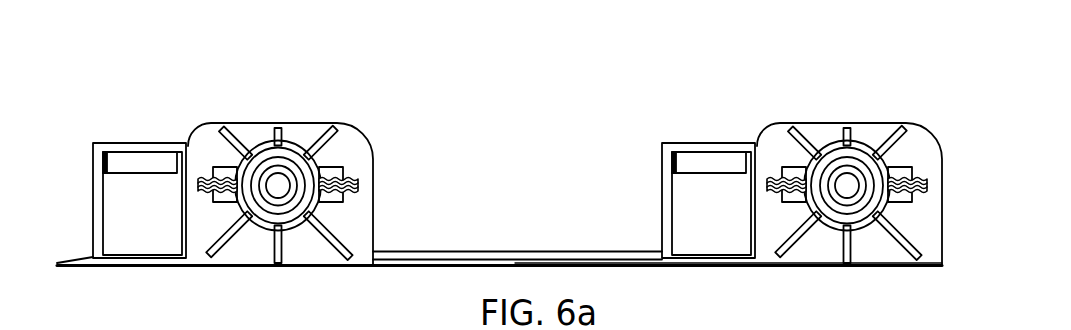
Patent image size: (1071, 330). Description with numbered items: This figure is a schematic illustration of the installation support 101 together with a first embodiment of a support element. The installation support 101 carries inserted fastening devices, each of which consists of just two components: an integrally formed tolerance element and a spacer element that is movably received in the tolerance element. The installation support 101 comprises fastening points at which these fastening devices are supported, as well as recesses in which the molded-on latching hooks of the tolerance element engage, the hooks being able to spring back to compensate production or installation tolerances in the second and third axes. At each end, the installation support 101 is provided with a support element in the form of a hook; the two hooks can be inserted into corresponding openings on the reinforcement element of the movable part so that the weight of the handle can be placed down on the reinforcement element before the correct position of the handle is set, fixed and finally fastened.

The installation support 101 is at (557, 255).